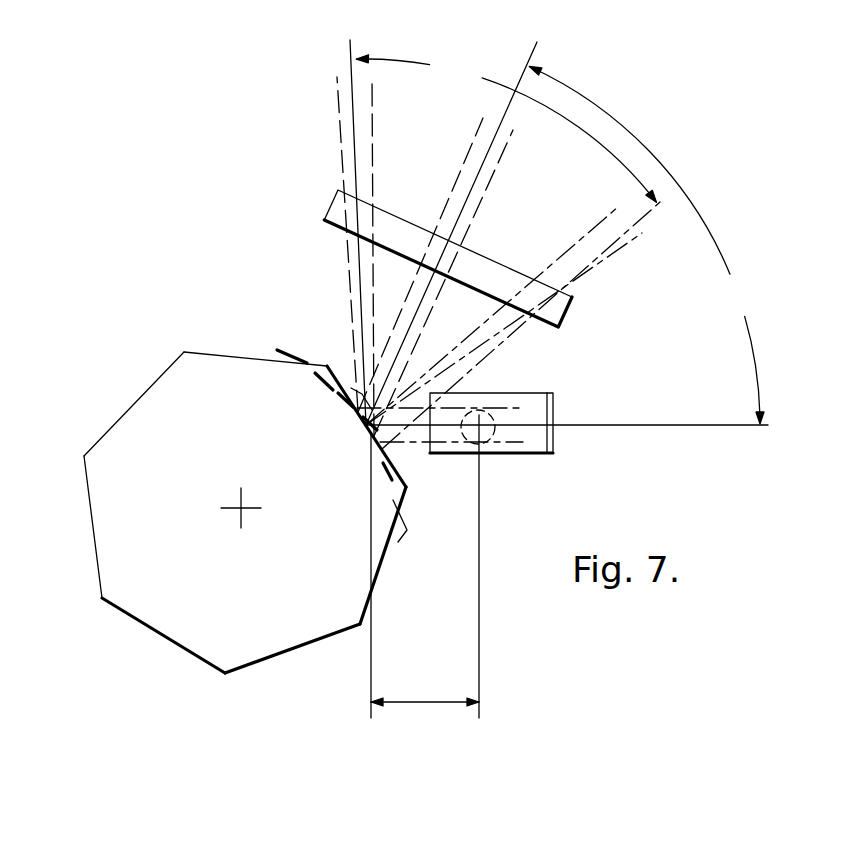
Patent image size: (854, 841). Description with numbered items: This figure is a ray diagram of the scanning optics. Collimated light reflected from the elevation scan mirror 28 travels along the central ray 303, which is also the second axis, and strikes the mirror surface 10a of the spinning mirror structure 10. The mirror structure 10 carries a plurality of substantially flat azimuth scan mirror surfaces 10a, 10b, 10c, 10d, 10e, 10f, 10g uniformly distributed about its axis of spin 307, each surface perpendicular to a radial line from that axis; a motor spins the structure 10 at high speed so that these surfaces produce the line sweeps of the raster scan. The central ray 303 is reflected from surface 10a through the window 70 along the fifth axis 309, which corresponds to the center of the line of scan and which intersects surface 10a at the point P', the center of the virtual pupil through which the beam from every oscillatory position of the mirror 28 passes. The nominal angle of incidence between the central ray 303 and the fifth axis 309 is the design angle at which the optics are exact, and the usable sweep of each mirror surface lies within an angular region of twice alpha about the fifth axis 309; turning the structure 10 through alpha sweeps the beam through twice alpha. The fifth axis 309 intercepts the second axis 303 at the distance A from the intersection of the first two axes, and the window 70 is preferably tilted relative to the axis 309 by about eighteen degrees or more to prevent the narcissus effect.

The spinning mirror structure 10 is at (173, 464).
The mirror surface 10a is at (339, 384).
The mirror surface 10b is at (233, 356).
The mirror surface 10c is at (142, 396).
The mirror surface 10d is at (90, 503).
The mirror surface 10e is at (163, 636).
The mirror surface 10f is at (316, 641).
The mirror surface 10g is at (383, 558).
The axis of spin 307 is at (243, 507).
The point P' is at (339, 436).
The fifth axis (central ray) 309 is at (504, 113).
The window 70 is at (480, 275).
The elevation scan mirror 28 is at (521, 403).
The central ray (second axis) 303 is at (418, 424).
The distance A is at (425, 566).